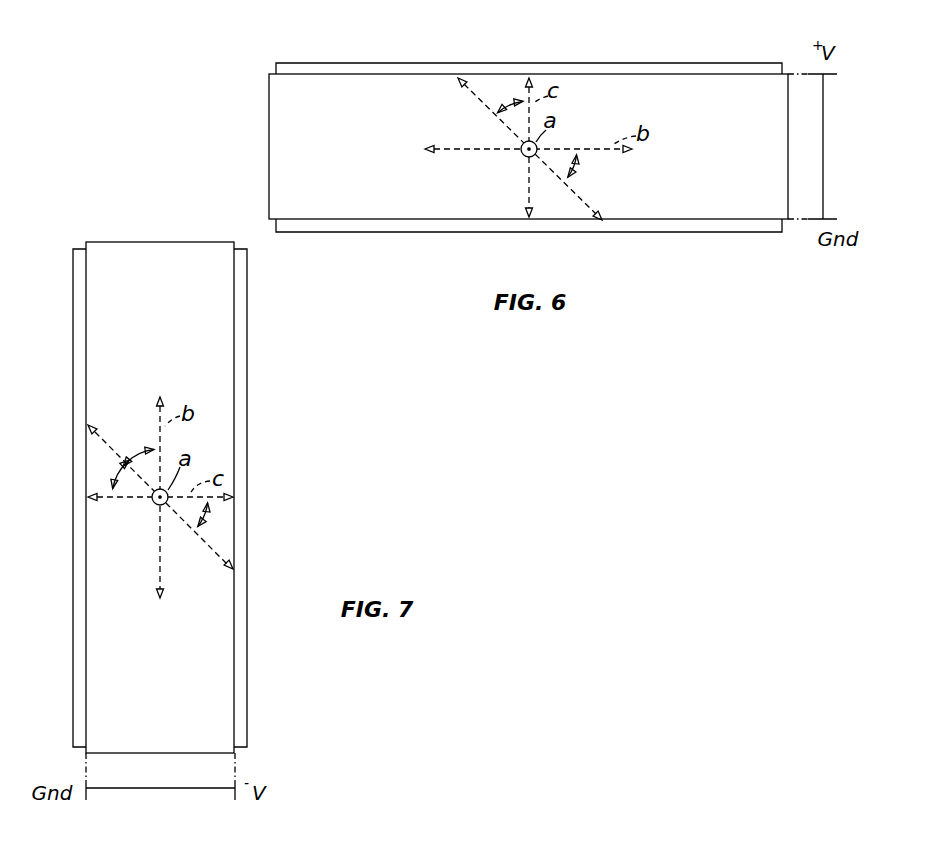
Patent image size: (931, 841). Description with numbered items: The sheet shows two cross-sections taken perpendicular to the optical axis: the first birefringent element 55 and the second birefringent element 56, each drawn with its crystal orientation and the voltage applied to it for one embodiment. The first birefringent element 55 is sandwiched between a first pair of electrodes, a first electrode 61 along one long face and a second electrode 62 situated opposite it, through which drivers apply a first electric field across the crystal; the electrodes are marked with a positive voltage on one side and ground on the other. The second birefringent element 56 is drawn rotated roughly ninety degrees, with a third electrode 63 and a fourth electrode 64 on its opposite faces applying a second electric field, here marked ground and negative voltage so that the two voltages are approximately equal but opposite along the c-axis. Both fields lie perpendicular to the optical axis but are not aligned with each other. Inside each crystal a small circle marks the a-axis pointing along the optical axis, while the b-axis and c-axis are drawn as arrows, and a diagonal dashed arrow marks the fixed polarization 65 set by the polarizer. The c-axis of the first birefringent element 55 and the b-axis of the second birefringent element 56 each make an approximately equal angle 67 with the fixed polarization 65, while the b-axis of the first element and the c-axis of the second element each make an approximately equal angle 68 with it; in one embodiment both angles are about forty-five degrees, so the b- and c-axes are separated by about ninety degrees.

In FIG. 6, the first birefringent element 55 is at (271, 137).
In FIG. 7, the second birefringent element 56 is at (130, 241).
In FIG. 6, the first electrode 61 is at (311, 66).
In FIG. 6, the second electrode 62 is at (302, 235).
In FIG. 7, the third electrode 63 is at (80, 328).
In FIG. 7, the fourth electrode 64 is at (240, 329).
In FIG. 6, the fixed polarization 65 is at (477, 97).
In FIG. 7, the fixed polarization 65 is at (100, 442).
In FIG. 6, the angle 67 is at (508, 106).
In FIG. 7, the angle 67 is at (136, 452).
In FIG. 6, the angle 68 is at (574, 166).
In FIG. 7, the angle 68 is at (204, 516).